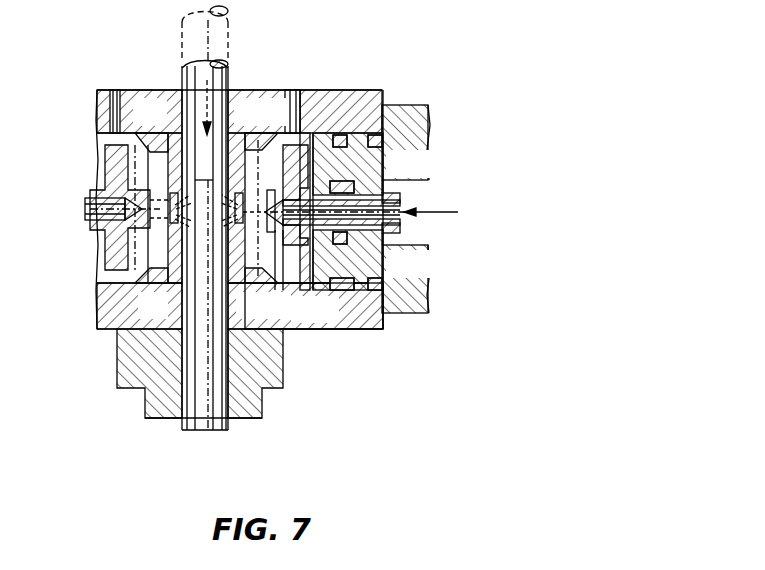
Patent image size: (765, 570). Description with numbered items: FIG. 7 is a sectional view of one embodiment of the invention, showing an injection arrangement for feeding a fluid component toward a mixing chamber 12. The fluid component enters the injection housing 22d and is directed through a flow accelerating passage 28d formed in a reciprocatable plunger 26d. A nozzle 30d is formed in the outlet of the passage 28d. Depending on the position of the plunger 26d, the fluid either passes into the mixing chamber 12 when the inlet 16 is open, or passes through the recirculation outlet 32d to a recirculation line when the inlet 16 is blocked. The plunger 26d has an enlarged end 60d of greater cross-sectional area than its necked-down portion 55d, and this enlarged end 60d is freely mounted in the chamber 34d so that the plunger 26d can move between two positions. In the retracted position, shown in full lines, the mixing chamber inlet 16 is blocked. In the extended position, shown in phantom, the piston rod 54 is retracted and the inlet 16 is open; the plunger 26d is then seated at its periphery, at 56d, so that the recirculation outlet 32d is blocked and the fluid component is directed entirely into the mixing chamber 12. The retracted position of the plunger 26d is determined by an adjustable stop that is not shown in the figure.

The mixing chamber 12 is at (180, 288).
The inlet 16 is at (203, 218).
The piston rod 54 is at (185, 104).
The nozzle 30d is at (284, 212).
The recirculation outlet 32d is at (286, 150).
The chamber 34d is at (158, 176).
The periphery seat 56d is at (140, 287).
The reciprocatable plunger 26d is at (386, 193).
The flow accelerating passage 28d is at (394, 213).
The necked-down portion 55d is at (405, 200).
The enlarged end 60d is at (288, 266).
The injection housing 22d is at (320, 330).